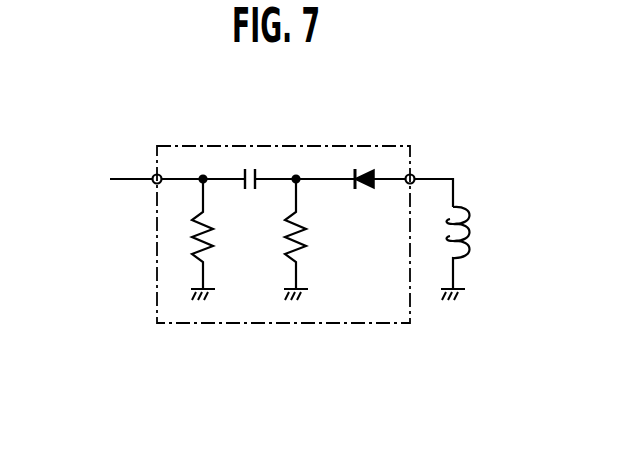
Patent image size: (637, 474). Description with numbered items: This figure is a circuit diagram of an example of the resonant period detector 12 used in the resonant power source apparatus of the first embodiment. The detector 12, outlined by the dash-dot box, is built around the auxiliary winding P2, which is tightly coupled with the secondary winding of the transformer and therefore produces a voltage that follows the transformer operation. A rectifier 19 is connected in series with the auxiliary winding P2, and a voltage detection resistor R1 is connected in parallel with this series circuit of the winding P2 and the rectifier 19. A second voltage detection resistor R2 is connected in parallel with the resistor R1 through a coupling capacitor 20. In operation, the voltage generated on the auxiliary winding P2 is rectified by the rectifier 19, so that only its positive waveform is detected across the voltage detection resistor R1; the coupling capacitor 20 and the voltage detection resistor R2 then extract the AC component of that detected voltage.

The resonant period detector 12 is at (157, 263).
The coupling capacitor 20 is at (252, 165).
The rectifier 19 is at (360, 170).
The voltage detection resistor R1 is at (311, 239).
The voltage detection resistor R2 is at (218, 239).
The auxiliary winding P2 is at (469, 253).